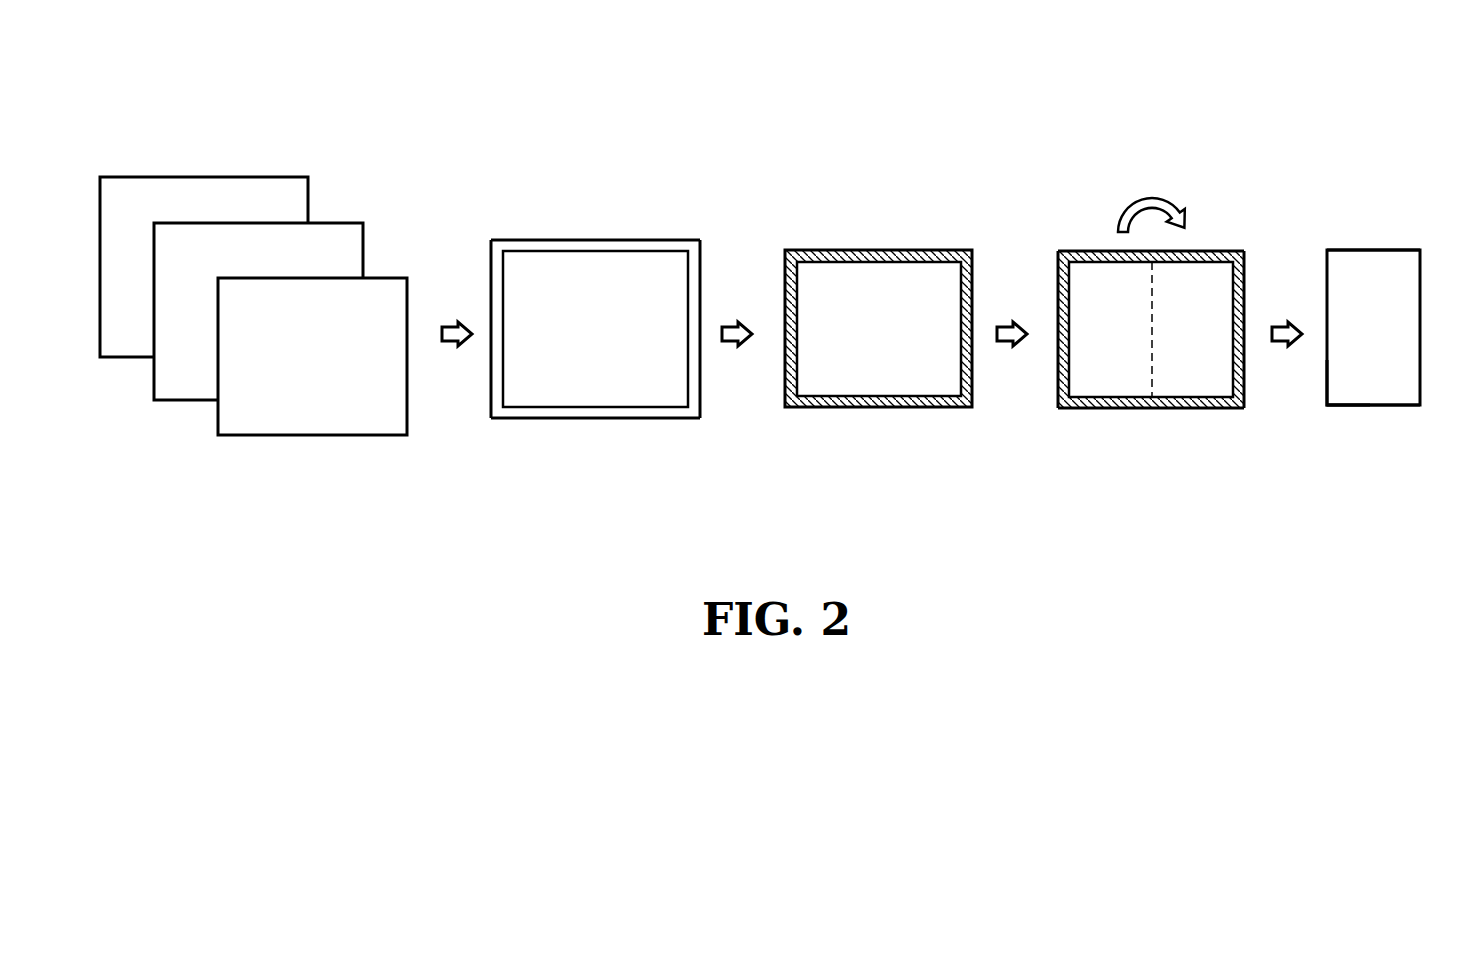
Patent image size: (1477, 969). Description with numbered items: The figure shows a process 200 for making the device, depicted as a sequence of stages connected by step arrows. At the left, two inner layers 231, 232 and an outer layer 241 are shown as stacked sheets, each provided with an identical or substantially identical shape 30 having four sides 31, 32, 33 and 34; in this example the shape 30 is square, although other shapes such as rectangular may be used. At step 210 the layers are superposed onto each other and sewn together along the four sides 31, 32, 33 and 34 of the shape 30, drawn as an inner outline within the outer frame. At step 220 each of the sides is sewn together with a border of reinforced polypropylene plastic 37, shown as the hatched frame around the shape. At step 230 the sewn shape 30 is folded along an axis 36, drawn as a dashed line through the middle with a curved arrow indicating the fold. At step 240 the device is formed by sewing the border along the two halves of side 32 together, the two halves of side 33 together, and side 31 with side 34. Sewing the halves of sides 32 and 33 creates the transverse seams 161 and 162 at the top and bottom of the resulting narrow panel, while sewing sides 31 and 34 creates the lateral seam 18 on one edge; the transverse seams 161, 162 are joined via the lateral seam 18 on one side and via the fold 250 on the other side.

The process 200 is at (582, 66).
The inner layer 231 is at (145, 221).
The inner layer 232 is at (197, 265).
The outer layer 241 is at (334, 382).
The shape 30 is at (305, 302).
The side 31 is at (689, 262).
The side 32 is at (672, 248).
The side 33 is at (562, 411).
The side 34 is at (503, 393).
The border of reinforced polypropylene plastic 37 is at (853, 246).
The axis 36 is at (1152, 343).
The step 210 is at (452, 322).
The step 220 is at (735, 322).
The step 230 is at (1011, 322).
The step 240 is at (1285, 322).
The fold 250 is at (1326, 392).
The transverse seam 161 is at (1373, 250).
The transverse seam 162 is at (1373, 405).
The lateral seam 18 is at (1421, 392).